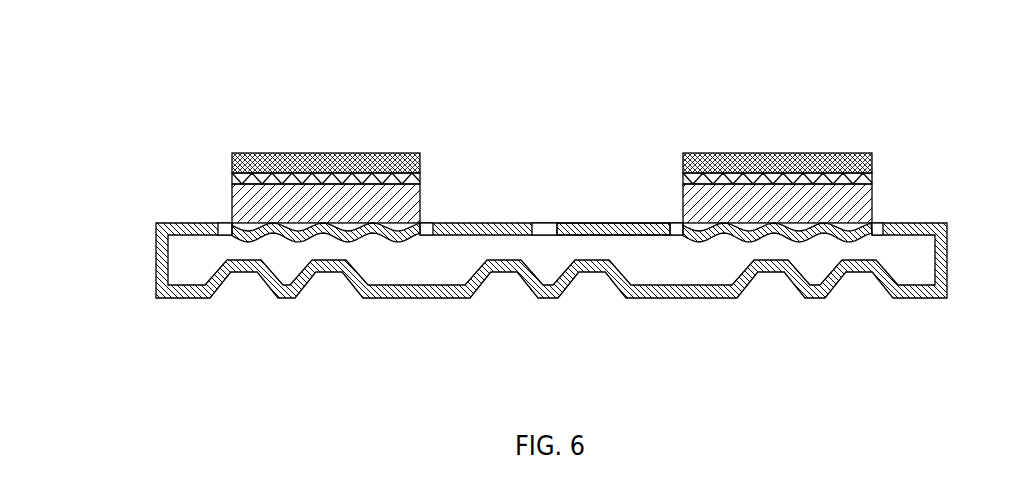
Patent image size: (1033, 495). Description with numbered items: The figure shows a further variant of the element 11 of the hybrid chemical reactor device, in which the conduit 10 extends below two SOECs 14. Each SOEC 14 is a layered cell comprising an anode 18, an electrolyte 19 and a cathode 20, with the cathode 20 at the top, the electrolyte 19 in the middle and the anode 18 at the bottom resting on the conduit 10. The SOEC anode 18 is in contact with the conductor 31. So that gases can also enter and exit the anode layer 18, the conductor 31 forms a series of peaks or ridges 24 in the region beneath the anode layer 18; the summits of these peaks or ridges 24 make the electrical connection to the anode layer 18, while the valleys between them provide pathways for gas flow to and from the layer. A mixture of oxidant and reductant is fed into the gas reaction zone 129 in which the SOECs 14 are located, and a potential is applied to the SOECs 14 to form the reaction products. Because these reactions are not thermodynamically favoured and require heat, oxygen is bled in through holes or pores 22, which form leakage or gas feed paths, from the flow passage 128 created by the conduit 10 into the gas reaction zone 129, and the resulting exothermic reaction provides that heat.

The conduit 10 is at (157, 273).
The element 11 is at (193, 108).
The SOEC 14 is at (225, 178).
The anode 18 is at (232, 207).
The electrolyte 19 is at (232, 181).
The cathode 20 is at (232, 163).
The holes or pores 22 is at (538, 230).
The peaks or ridges 24 is at (797, 232).
The conductor 31 is at (653, 228).
The flow passage 128 is at (430, 272).
The gas reaction zone 129 is at (547, 194).